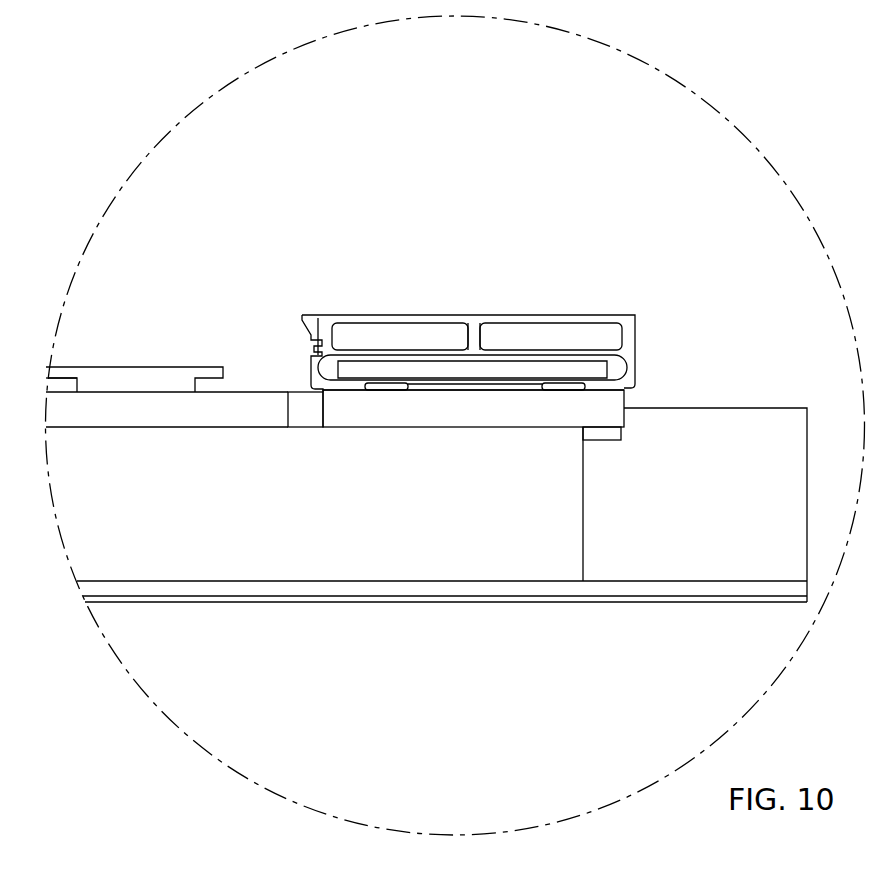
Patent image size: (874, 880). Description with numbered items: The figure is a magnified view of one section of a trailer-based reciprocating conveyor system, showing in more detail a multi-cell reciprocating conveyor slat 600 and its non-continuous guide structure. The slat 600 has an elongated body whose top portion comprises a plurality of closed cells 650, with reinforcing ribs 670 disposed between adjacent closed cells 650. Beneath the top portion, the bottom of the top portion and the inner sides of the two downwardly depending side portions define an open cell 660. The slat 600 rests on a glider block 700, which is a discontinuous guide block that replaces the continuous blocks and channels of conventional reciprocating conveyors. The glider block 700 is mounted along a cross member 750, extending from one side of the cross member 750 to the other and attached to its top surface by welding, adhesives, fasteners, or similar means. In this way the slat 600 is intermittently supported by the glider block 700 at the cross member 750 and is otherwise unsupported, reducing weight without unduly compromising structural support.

The slat 600 is at (497, 321).
The closed cells 650 is at (362, 337).
The ribs 670 is at (475, 330).
The open cell 660 is at (620, 370).
The glider block 700 is at (238, 412).
The cross member 750 is at (728, 425).